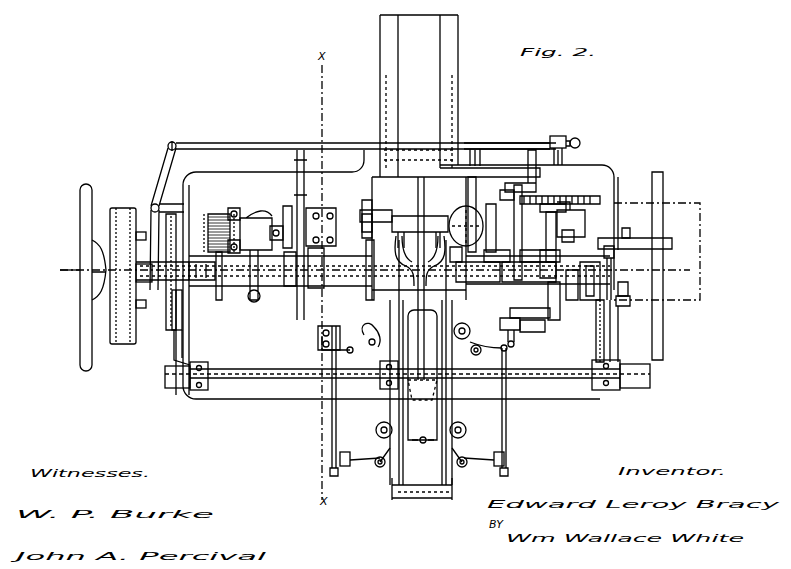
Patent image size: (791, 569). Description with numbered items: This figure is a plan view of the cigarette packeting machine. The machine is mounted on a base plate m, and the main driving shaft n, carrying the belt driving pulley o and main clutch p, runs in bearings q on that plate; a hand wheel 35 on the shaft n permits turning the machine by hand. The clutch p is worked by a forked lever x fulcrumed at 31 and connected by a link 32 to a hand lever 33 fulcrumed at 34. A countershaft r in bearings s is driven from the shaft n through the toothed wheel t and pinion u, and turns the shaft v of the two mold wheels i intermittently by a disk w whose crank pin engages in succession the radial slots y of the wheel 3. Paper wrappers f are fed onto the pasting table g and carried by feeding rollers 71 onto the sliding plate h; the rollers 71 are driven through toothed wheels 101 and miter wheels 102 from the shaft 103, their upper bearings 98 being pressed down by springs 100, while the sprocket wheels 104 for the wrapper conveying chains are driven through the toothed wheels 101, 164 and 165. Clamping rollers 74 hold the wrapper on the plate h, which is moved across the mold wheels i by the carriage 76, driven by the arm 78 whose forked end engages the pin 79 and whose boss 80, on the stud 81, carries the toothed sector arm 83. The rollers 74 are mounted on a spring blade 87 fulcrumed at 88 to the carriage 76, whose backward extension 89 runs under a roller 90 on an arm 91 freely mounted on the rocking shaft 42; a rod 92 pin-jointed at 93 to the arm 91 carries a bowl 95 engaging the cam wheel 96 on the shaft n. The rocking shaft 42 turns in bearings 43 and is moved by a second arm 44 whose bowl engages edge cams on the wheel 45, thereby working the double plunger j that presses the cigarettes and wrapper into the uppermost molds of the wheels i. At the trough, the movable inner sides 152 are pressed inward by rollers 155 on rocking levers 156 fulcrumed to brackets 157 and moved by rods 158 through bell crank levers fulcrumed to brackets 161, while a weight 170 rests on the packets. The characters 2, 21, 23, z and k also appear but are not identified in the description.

The shaft 2 is at (316, 288).
The wheel 3 is at (297, 150).
The column 21 is at (419, 242).
The lever 23 is at (368, 290).
The fulcrum 31 is at (153, 200).
The link 32 is at (224, 142).
The hand lever 33 is at (580, 141).
The fulcrum 34 is at (560, 134).
The hand wheel 35 is at (80, 208).
The rocking shaft 42 is at (166, 378).
The bearings 43 is at (200, 372).
The second arm 44 is at (180, 343).
The cam wheel 45 is at (176, 322).
The feeding rollers 71 is at (497, 246).
The clamping rollers 74 is at (456, 246).
The carriage 76 is at (534, 270).
The arm 78 is at (550, 301).
The pin or stud 79 is at (567, 286).
The boss 80 is at (529, 294).
The stud 81 is at (537, 331).
The toothed sector arm 83 is at (556, 316).
The spring blade 87 is at (472, 294).
The fulcrum 88 is at (572, 234).
The backward extension 89 is at (640, 244).
The roller 90 is at (609, 246).
The arm 91 is at (618, 312).
The rod 92 is at (628, 289).
The pin joint 93 is at (608, 300).
The bowl 95 is at (630, 300).
The cam wheel 96 is at (628, 232).
The upper bearings 98 is at (512, 212).
The springs 100 is at (506, 190).
The toothed wheels 101 is at (538, 186).
The miter wheels 102 is at (530, 162).
The shaft 103 is at (484, 140).
The sprocket wheels 104 is at (580, 210).
The movable inner sides 152 is at (448, 466).
The rollers 155 is at (468, 330).
The rocking levers 156 is at (474, 348).
The brackets 157 is at (366, 330).
The rods 158 is at (334, 398).
The brackets 161 is at (520, 330).
The toothed wheel 164 is at (560, 196).
The toothed wheel 165 is at (558, 206).
The weight 170 is at (421, 392).
The base plate m is at (608, 170).
The main driving shaft n is at (80, 272).
The belt driving pulley o is at (124, 208).
The main clutch p is at (140, 282).
The bearings q is at (204, 266).
The countershaft r is at (254, 216).
The bearings s is at (232, 208).
The toothed wheel t is at (222, 300).
The pinion u is at (210, 214).
The shaft v is at (366, 214).
The disk w is at (288, 206).
The forked lever x is at (167, 272).
The radial slots y is at (318, 202).
The shaft z is at (290, 286).
The paper wrappers or blanks f is at (492, 204).
The pasting table g is at (642, 203).
The sliding plate h is at (392, 244).
The mold wheels i is at (362, 204).
The double plunger j is at (404, 216).
The spindle k is at (428, 210).